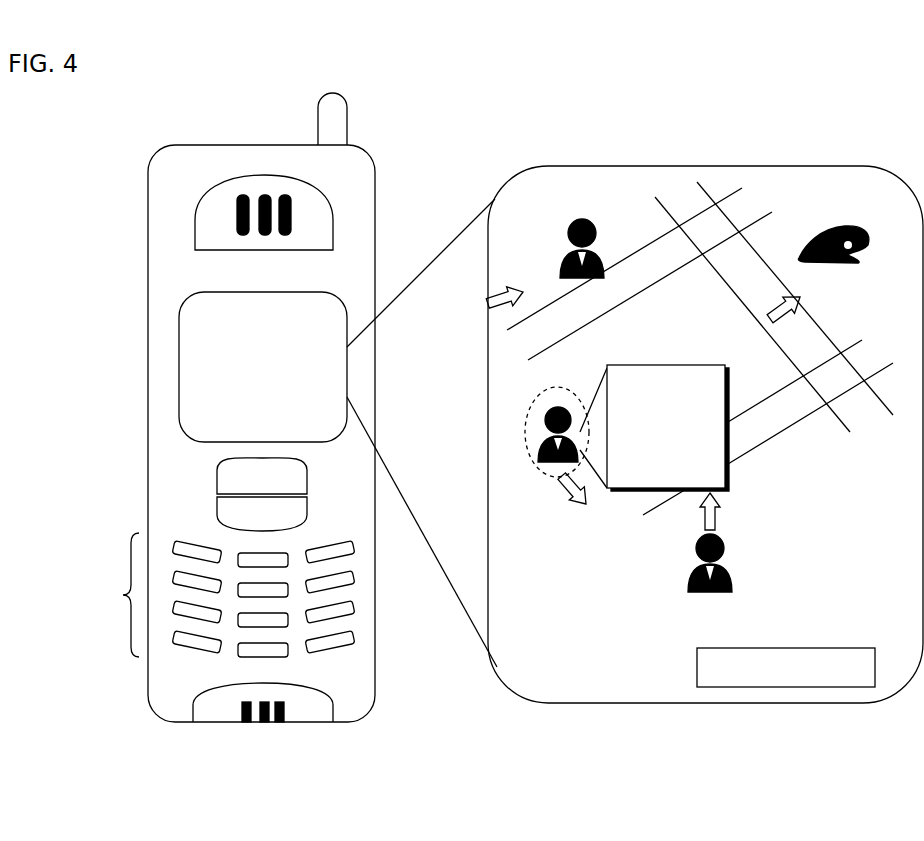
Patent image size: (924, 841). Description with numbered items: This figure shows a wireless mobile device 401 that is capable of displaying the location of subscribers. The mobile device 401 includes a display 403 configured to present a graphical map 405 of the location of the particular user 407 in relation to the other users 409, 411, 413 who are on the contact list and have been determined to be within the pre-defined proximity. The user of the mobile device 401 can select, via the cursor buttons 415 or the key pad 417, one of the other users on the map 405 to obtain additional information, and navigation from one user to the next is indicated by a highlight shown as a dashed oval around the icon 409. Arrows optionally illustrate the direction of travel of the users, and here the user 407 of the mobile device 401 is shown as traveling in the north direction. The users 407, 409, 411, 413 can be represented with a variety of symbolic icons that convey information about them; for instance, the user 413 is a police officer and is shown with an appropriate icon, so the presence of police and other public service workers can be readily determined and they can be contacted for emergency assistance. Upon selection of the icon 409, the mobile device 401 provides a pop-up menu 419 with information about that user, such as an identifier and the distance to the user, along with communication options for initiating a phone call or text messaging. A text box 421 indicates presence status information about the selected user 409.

The mobile device 401 is at (375, 188).
The display 403 is at (178, 342).
The map 405 is at (749, 167).
The particular user 407 is at (690, 570).
The icon 409 is at (533, 466).
The user 411 is at (597, 232).
The user 413 is at (849, 268).
The cursor buttons 415 is at (217, 482).
The key pad 417 is at (122, 594).
The pop-up menu 419 is at (730, 407).
The text box 421 is at (697, 672).